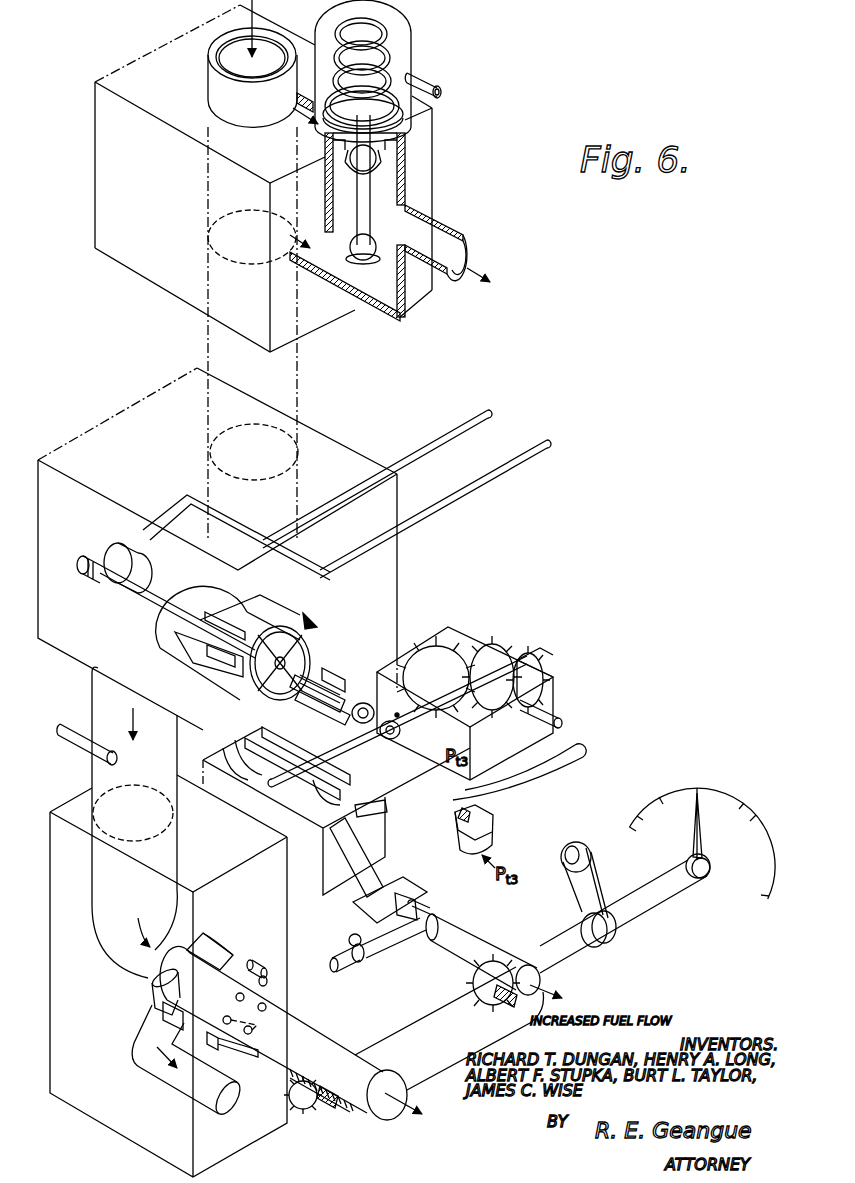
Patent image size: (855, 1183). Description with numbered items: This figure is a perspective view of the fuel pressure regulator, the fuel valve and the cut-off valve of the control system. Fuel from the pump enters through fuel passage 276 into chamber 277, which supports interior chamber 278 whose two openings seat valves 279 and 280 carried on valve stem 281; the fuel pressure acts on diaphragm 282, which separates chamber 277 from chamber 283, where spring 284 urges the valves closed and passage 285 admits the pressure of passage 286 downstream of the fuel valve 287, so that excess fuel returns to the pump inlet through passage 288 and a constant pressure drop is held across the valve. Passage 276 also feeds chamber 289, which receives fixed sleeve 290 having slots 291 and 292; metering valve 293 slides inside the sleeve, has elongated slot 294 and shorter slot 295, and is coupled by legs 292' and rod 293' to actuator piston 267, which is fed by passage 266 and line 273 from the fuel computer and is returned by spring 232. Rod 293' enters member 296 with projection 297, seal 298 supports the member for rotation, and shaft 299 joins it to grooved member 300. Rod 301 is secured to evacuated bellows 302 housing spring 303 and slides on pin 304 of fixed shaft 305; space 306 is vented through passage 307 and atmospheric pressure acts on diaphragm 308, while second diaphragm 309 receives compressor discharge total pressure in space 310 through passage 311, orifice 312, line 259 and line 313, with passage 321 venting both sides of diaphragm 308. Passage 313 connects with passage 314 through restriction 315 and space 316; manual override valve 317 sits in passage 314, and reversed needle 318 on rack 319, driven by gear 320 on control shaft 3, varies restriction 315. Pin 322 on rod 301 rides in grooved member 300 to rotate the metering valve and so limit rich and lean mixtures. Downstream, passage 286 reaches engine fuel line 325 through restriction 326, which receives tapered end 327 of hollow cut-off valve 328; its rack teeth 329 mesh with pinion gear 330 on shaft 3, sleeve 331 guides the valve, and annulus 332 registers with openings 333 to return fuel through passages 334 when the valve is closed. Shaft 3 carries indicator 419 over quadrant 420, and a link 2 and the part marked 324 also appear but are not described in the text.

The lever 2 is at (580, 895).
The control shaft 3 is at (650, 897).
The spring 232 is at (86, 562).
The line 259 is at (567, 742).
The passage 266 is at (445, 433).
The fuel valve actuator piston 267 is at (117, 555).
The line 273 is at (505, 467).
The fuel passage 276 is at (212, 90).
The chamber 277 is at (332, 258).
The interior chamber 278 is at (340, 175).
The valve 279 is at (377, 160).
The valve 280 is at (366, 265).
The valve stem 281 is at (363, 195).
The diaphragm 282 is at (393, 107).
The chamber 283 is at (407, 58).
The spring 284 is at (385, 22).
The passage 285 is at (425, 80).
The passage 286 is at (97, 770).
The fuel valve 287 is at (310, 620).
The passage 288 is at (455, 252).
The chamber 289 is at (185, 572).
The fixed sleeve 290 is at (305, 635).
The slot 291 is at (220, 613).
The slot 292 is at (193, 663).
The legs 292' is at (337, 629).
The metering valve 293 is at (332, 667).
The rod 293' is at (157, 611).
The elongated slot 294 is at (237, 625).
The shorter slot 295 is at (165, 635).
The member 296 is at (307, 707).
The projection 297 is at (325, 678).
The seal 298 is at (330, 720).
The shaft 299 is at (358, 703).
The grooved member 300 is at (391, 740).
The rod 301 is at (420, 707).
The bellows 302 is at (540, 668).
The spring 303 is at (527, 658).
The pin 304 is at (448, 648).
The fixed shaft 305 is at (493, 648).
The space 306 is at (410, 660).
The passage 307 is at (555, 713).
The diaphragm 308 is at (247, 740).
The second diaphragm 309 is at (233, 737).
The space 310 is at (217, 757).
The passage 311 is at (493, 828).
The orifice 312 is at (450, 818).
The line 313 is at (347, 845).
The passage 314 is at (390, 940).
The restriction 315 is at (418, 900).
The space 316 is at (390, 887).
The valve 317 is at (367, 965).
The reversed needle 318 is at (403, 895).
The rack 319 is at (467, 933).
The gear 320 is at (510, 1008).
The passage 321 is at (387, 812).
The pin 322 is at (398, 720).
The body 324 is at (237, 960).
The engine fuel line 325 is at (170, 1080).
The restriction 326 is at (130, 980).
The tapered end 327 is at (160, 965).
The cut-off valve 328 is at (227, 948).
The rack teeth 329 is at (348, 1106).
The pinion gear 330 is at (323, 1113).
The sleeve 331 is at (287, 993).
The annulus 332 is at (267, 981).
The openings 333 is at (257, 1025).
The by-pass passages 334 is at (258, 962).
The indicator 419 is at (695, 842).
The quadrant 420 is at (722, 808).